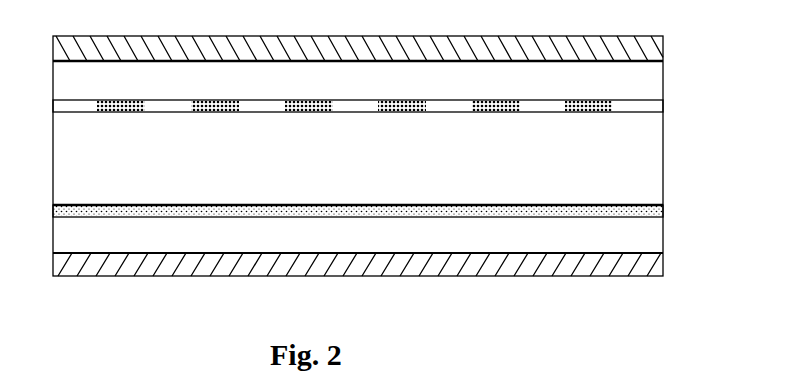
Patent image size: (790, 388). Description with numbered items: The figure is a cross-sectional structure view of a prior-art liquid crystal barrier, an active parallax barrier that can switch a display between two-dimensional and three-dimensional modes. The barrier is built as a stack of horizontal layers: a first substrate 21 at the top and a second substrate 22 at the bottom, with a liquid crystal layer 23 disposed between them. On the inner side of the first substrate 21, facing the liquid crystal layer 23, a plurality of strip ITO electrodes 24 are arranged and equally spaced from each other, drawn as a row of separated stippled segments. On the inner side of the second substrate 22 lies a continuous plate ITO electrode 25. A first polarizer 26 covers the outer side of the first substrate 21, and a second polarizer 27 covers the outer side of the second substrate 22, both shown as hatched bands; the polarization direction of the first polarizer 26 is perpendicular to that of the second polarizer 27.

The first substrate 21 is at (647, 80).
The second substrate 22 is at (650, 236).
The liquid crystal layer 23 is at (647, 152).
The strip ITO electrodes 24 is at (612, 106).
The plate ITO electrode 25 is at (652, 209).
The first polarizer 26 is at (648, 51).
The second polarizer 27 is at (652, 265).